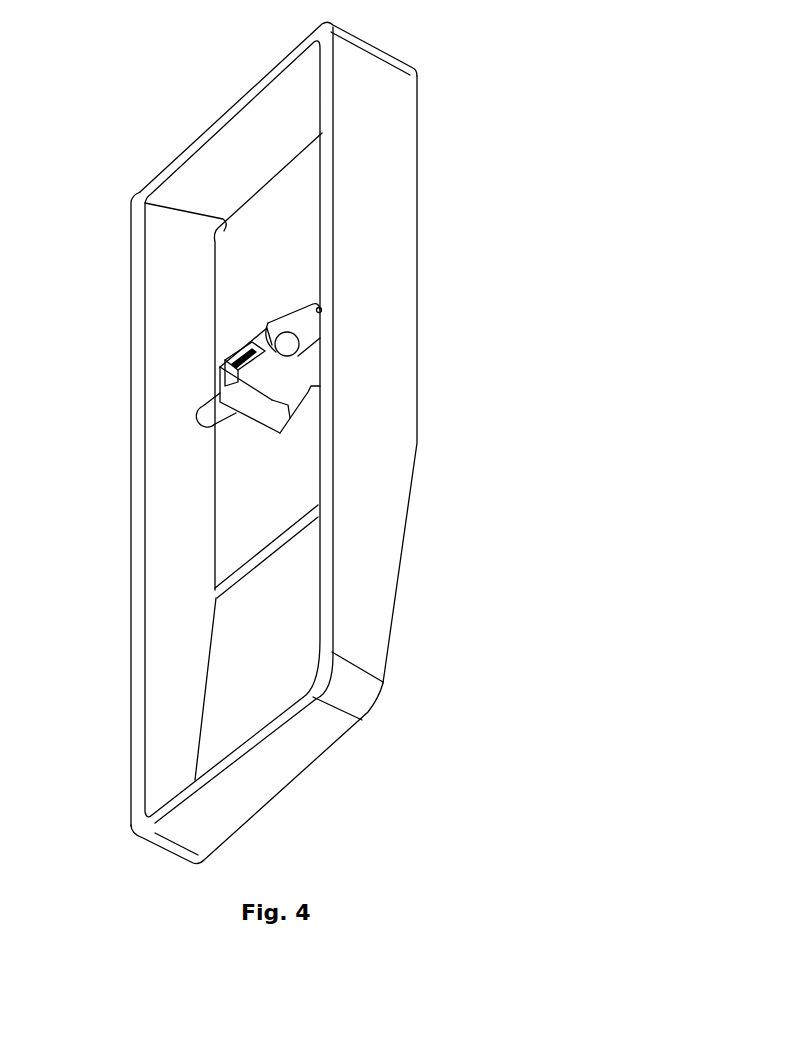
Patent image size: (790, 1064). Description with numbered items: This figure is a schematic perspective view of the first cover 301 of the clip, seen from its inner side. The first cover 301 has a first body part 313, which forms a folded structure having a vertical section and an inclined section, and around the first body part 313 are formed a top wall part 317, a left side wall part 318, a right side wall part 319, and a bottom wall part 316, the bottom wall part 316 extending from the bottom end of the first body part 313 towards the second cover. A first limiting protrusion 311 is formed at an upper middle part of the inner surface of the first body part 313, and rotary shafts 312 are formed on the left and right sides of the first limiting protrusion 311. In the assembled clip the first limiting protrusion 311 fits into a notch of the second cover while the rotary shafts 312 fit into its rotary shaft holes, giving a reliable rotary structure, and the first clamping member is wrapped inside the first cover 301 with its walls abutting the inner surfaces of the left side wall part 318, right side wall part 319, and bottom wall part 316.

The first cover 301 is at (131, 151).
The first limiting protrusion 311 is at (252, 347).
The rotary shafts 312 is at (293, 346).
The first body part 313 is at (228, 668).
The bottom wall part 316 is at (240, 775).
The top wall part 317 is at (255, 120).
The left side wall part 318 is at (392, 153).
The right side wall part 319 is at (145, 347).